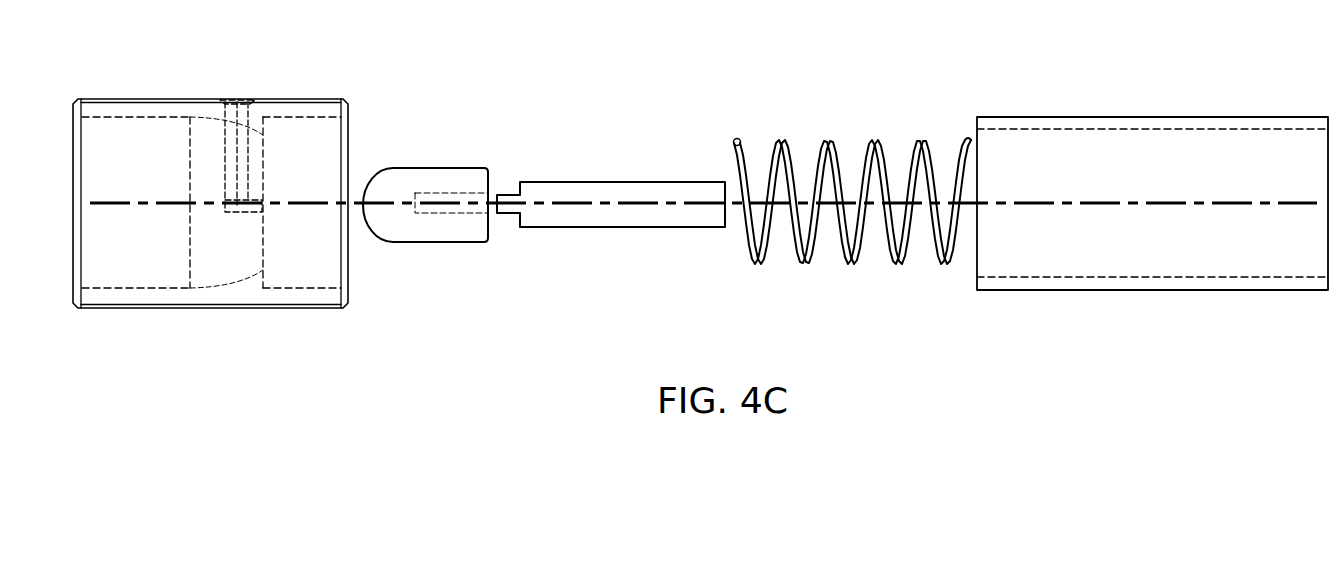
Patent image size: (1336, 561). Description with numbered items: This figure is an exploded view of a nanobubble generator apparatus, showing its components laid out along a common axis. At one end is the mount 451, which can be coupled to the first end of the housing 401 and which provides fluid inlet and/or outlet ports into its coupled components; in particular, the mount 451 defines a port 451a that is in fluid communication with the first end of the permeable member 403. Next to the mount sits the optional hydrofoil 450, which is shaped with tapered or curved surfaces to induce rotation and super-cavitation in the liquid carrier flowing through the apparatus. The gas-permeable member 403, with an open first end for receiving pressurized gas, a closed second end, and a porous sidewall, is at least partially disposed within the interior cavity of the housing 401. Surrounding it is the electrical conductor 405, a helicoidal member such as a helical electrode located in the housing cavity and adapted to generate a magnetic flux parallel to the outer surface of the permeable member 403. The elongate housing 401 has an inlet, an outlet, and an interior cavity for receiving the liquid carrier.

The housing 401 is at (1167, 116).
The permeable member 403 is at (613, 181).
The electrical conductor 405 is at (875, 138).
The hydrofoil 450 is at (435, 167).
The mount 451 is at (157, 99).
The port 451a is at (238, 98).